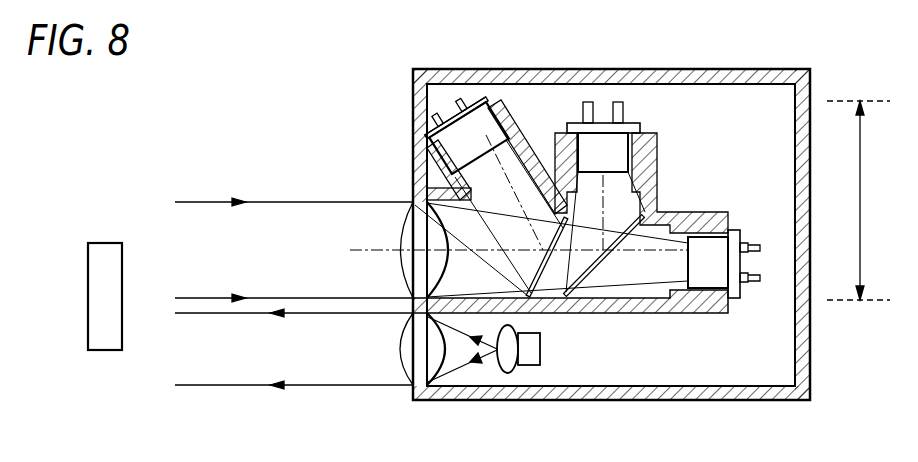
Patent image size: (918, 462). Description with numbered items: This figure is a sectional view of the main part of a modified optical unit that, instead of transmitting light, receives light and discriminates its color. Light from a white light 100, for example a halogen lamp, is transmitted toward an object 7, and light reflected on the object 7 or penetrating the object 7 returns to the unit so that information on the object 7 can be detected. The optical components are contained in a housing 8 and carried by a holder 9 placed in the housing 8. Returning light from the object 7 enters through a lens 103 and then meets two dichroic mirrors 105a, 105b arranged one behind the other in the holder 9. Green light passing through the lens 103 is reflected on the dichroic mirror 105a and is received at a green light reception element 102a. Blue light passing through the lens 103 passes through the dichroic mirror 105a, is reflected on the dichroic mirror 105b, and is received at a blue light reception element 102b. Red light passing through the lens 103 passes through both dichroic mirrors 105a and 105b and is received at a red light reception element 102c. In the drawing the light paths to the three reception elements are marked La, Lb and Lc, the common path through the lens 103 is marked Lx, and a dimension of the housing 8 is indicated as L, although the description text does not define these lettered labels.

The object 7 is at (103, 243).
The housing 8 is at (472, 68).
The holder 9 is at (708, 315).
The white light 100 is at (505, 362).
The green light reception element 102a is at (490, 135).
The blue light reception element 102b is at (623, 155).
The red light reception element 102c is at (718, 243).
The lens 103 is at (404, 231).
The dichroic mirror 105a is at (558, 312).
The dichroic mirror 105b is at (612, 312).
The light beam from first light source La is at (537, 148).
The light beam from second light source Lb is at (658, 187).
The light beam from third light source Lc is at (657, 252).
The combined light beam Lx is at (490, 258).
The length dimension L is at (858, 200).